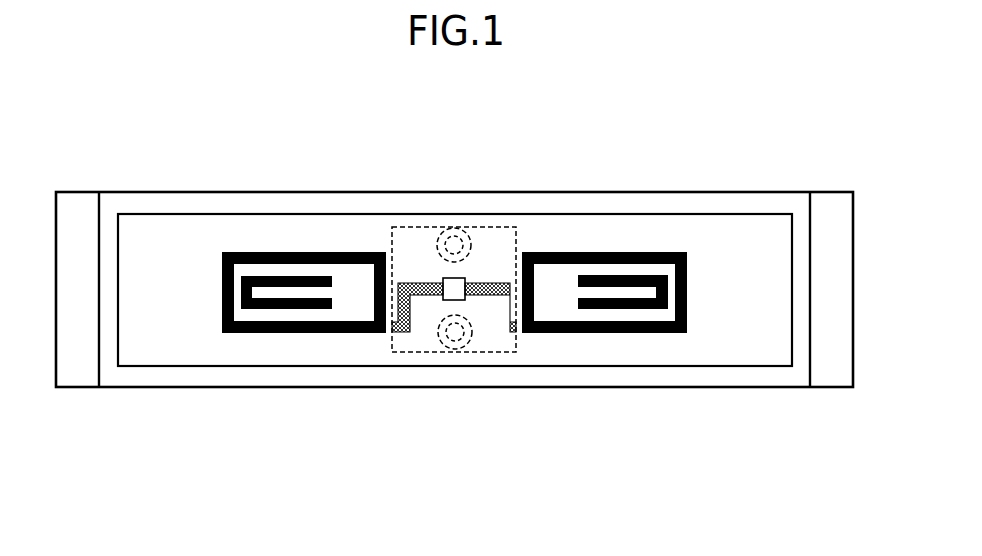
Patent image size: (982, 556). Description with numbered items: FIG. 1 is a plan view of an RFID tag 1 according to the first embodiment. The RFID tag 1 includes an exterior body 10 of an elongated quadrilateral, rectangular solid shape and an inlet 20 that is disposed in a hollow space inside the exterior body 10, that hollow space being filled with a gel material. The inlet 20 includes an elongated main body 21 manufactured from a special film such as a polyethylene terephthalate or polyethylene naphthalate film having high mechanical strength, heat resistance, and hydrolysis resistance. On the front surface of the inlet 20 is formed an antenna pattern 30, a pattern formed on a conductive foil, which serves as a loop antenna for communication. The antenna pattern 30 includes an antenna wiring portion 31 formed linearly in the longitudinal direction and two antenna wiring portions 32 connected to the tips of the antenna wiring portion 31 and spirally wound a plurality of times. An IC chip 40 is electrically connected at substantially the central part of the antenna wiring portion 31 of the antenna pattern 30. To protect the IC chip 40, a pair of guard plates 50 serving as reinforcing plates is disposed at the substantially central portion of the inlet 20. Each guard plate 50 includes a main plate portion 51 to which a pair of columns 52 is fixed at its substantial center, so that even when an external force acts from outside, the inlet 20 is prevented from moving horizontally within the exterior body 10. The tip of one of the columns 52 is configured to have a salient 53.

The RFID tag 1 is at (648, 194).
The exterior body 10 is at (78, 210).
The inlet 20 is at (214, 366).
The main body 21 is at (167, 368).
The antenna pattern 30 is at (272, 333).
The antenna wiring portion 31 is at (443, 279).
The antenna wiring portions 32 is at (280, 252).
The IC chip 40 is at (447, 299).
The guard plate 50 is at (516, 227).
The main plate portion 51 is at (430, 282).
The columns 52 is at (468, 232).
The salient 53 is at (456, 236).